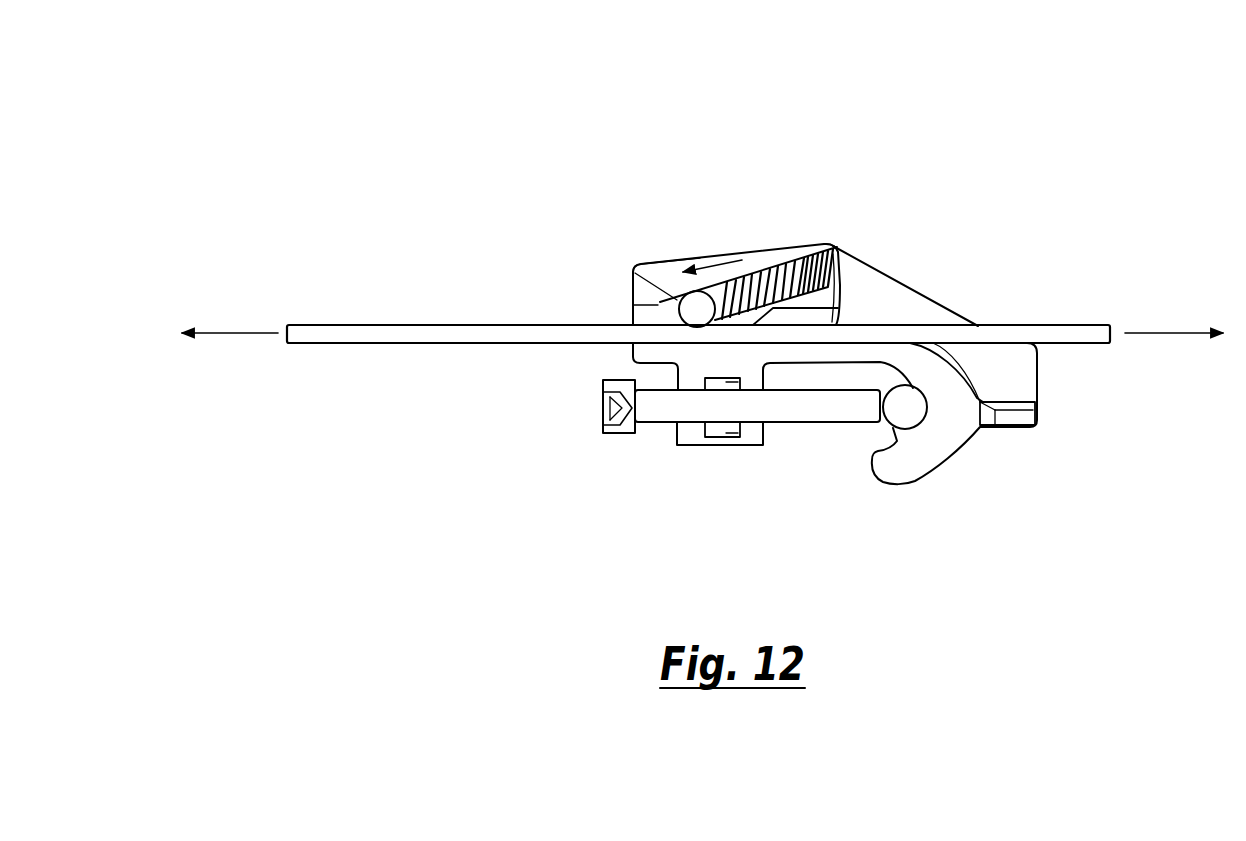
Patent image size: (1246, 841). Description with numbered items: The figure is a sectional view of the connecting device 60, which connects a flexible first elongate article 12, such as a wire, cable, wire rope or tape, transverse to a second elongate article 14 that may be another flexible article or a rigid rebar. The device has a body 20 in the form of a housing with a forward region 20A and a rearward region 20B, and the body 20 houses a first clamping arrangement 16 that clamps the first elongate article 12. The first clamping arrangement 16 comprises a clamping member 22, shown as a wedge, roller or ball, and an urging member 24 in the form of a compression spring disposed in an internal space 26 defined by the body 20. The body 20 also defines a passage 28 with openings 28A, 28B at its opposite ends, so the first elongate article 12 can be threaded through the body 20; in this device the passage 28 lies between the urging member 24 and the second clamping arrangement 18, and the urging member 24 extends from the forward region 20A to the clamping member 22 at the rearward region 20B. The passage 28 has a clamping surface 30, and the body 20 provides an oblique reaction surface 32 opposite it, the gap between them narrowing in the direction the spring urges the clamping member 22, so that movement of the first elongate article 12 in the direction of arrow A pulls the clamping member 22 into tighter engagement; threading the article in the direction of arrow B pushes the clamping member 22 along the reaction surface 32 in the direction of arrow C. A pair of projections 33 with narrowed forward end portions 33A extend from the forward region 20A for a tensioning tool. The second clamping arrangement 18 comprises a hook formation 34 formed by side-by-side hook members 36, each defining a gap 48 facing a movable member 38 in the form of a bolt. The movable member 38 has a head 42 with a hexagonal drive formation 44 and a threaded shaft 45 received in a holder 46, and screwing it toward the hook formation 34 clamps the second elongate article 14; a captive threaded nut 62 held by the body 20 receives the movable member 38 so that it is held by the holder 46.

The first elongate article 12 is at (1090, 332).
The second elongate article 14 is at (898, 416).
The first clamping arrangement 16 is at (653, 257).
The second clamping arrangement 18 is at (950, 476).
The body 20 is at (690, 272).
The forward region 20A is at (832, 245).
The rearward region 20B is at (631, 288).
The clamping member 22 is at (655, 263).
The urging member 24 is at (830, 276).
The internal space 26 is at (768, 282).
The passage 28 is at (787, 330).
The opening 28A is at (631, 323).
The opening 28B is at (1040, 346).
The clamping surface 30 is at (745, 280).
The reaction surface 32 is at (658, 306).
The projections 33 is at (920, 293).
The narrowed forward end portions 33A is at (1040, 382).
The hook formation 34 is at (887, 490).
The hook members 36 is at (947, 433).
The movable member 38 is at (600, 386).
The head 42 is at (622, 432).
The drive formation 44 is at (607, 408).
The threaded shaft 45 is at (750, 407).
The holder 46 is at (693, 444).
The gap 48 is at (886, 438).
The connecting device 60 is at (715, 220).
The washer 62 is at (720, 437).
The arrow A is at (233, 334).
The arrow B is at (1178, 332).
The arrow C is at (717, 268).